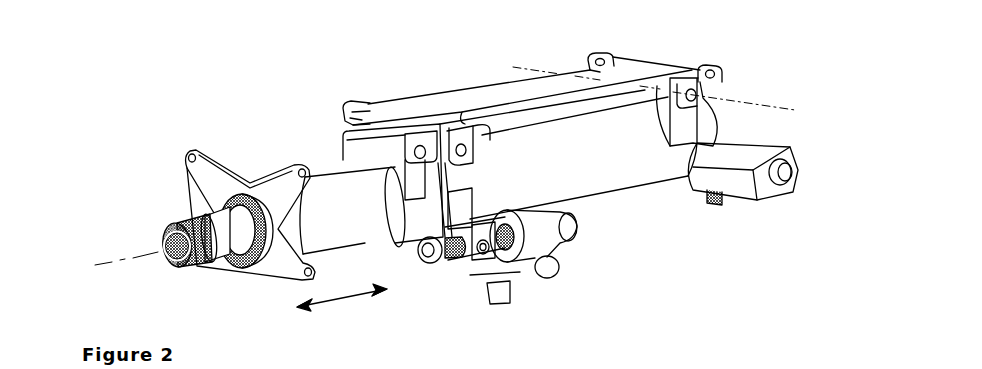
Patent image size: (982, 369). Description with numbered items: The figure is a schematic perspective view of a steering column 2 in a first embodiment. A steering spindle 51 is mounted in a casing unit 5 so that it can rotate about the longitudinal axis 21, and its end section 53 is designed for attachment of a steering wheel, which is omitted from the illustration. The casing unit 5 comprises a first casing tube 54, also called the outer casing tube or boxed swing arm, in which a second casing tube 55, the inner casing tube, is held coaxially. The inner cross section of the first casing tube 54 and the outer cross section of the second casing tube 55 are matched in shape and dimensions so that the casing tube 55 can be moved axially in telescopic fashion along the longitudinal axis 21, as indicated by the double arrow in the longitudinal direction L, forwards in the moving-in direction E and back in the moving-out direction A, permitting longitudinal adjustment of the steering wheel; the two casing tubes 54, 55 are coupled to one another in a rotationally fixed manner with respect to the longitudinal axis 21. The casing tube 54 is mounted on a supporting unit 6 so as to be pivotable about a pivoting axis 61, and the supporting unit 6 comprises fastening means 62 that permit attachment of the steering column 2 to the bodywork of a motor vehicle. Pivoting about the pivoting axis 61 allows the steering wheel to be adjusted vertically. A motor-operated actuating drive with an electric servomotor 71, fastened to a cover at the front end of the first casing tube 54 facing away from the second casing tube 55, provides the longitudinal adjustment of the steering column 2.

The steering column 2 is at (441, 53).
The casing unit 5 is at (652, 190).
The supporting unit 6 is at (631, 66).
The pivoting axis 61 is at (736, 98).
The fastening means 62 is at (599, 52).
The electric servomotor 71 is at (766, 196).
The first casing tube 54 is at (600, 183).
The second casing tube 55 is at (333, 194).
The steering spindle 51 is at (220, 220).
The end section 53 is at (180, 221).
The longitudinal axis 21 is at (103, 262).
The moving-out direction A is at (304, 311).
The longitudinal direction L is at (343, 302).
The moving-in direction E is at (379, 300).